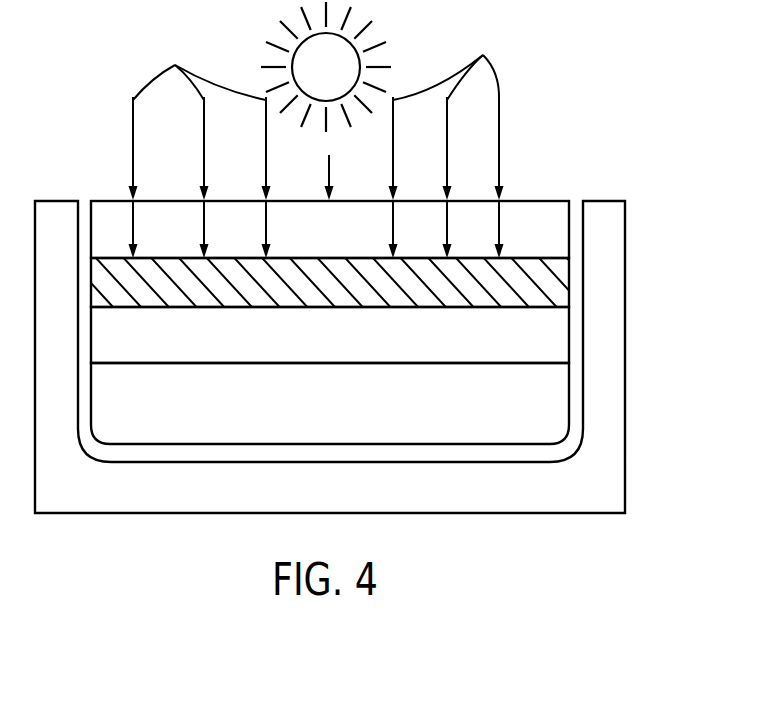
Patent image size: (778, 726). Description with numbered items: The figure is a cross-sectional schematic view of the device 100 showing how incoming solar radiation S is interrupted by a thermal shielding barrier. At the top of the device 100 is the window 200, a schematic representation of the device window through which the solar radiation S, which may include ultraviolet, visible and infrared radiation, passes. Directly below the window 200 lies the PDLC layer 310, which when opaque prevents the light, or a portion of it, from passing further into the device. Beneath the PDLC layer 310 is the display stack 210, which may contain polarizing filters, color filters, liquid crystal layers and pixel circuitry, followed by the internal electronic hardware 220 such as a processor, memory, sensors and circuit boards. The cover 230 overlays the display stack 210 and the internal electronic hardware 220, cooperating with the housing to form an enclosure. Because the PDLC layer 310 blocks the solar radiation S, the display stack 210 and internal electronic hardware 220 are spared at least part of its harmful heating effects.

The device 100 is at (642, 197).
The window 200 is at (344, 238).
The PDLC layer 310 is at (344, 297).
The display stack 210 is at (344, 345).
The internal electronic hardware 220 is at (344, 417).
The cover 230 is at (344, 500).
The solar radiation S is at (316, 143).